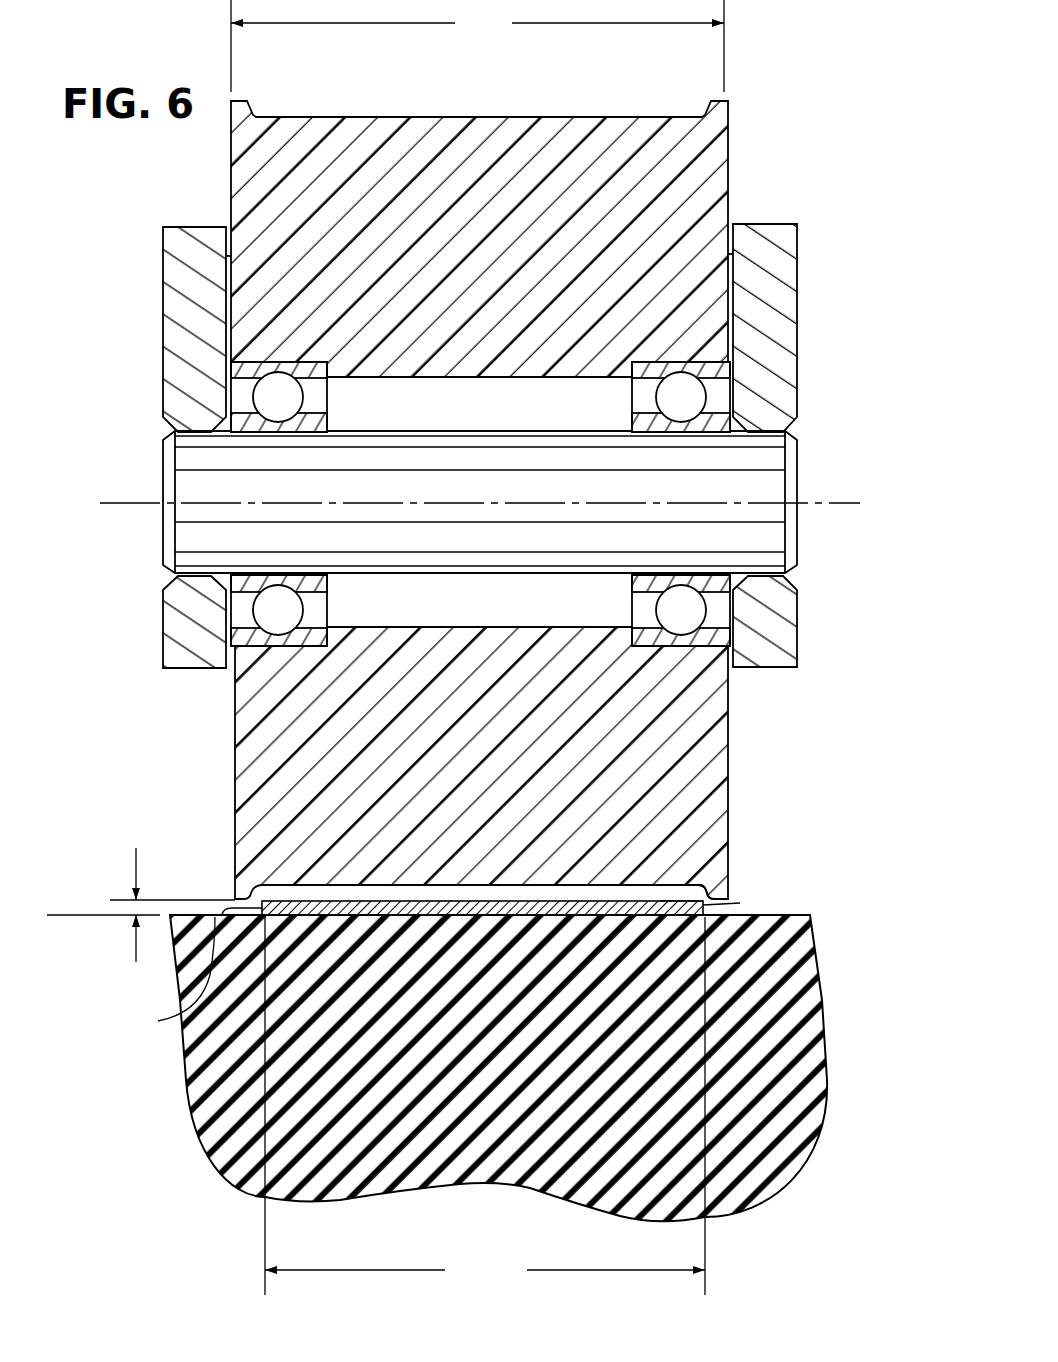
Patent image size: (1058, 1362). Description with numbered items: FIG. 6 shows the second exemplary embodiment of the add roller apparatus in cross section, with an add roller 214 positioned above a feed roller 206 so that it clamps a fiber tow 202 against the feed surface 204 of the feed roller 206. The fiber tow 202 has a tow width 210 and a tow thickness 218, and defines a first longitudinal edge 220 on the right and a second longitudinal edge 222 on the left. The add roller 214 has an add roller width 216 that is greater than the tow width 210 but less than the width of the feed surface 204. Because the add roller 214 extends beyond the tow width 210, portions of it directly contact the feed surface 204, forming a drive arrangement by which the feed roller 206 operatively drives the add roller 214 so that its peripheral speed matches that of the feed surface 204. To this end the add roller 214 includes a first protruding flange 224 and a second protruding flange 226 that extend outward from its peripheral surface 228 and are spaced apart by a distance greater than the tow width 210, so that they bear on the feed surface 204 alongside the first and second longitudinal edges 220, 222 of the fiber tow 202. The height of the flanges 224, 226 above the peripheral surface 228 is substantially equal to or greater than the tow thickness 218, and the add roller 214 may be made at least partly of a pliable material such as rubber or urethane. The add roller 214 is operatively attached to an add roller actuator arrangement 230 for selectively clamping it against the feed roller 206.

The fiber tow 202 is at (723, 893).
The feed surface 204 is at (70, 915).
The feed roller 206 is at (790, 1000).
The tow width 210 is at (485, 1106).
The add roller 214 is at (710, 160).
The add roller width 216 is at (477, 46).
The tow thickness 218 is at (172, 885).
The first longitudinal edge 220 is at (705, 905).
The second longitudinal edge 222 is at (158, 1021).
The first protruding flange 224 is at (708, 900).
The second protruding flange 226 is at (230, 899).
The peripheral surface 228 is at (688, 880).
The add roller actuator arrangement 230 is at (763, 298).